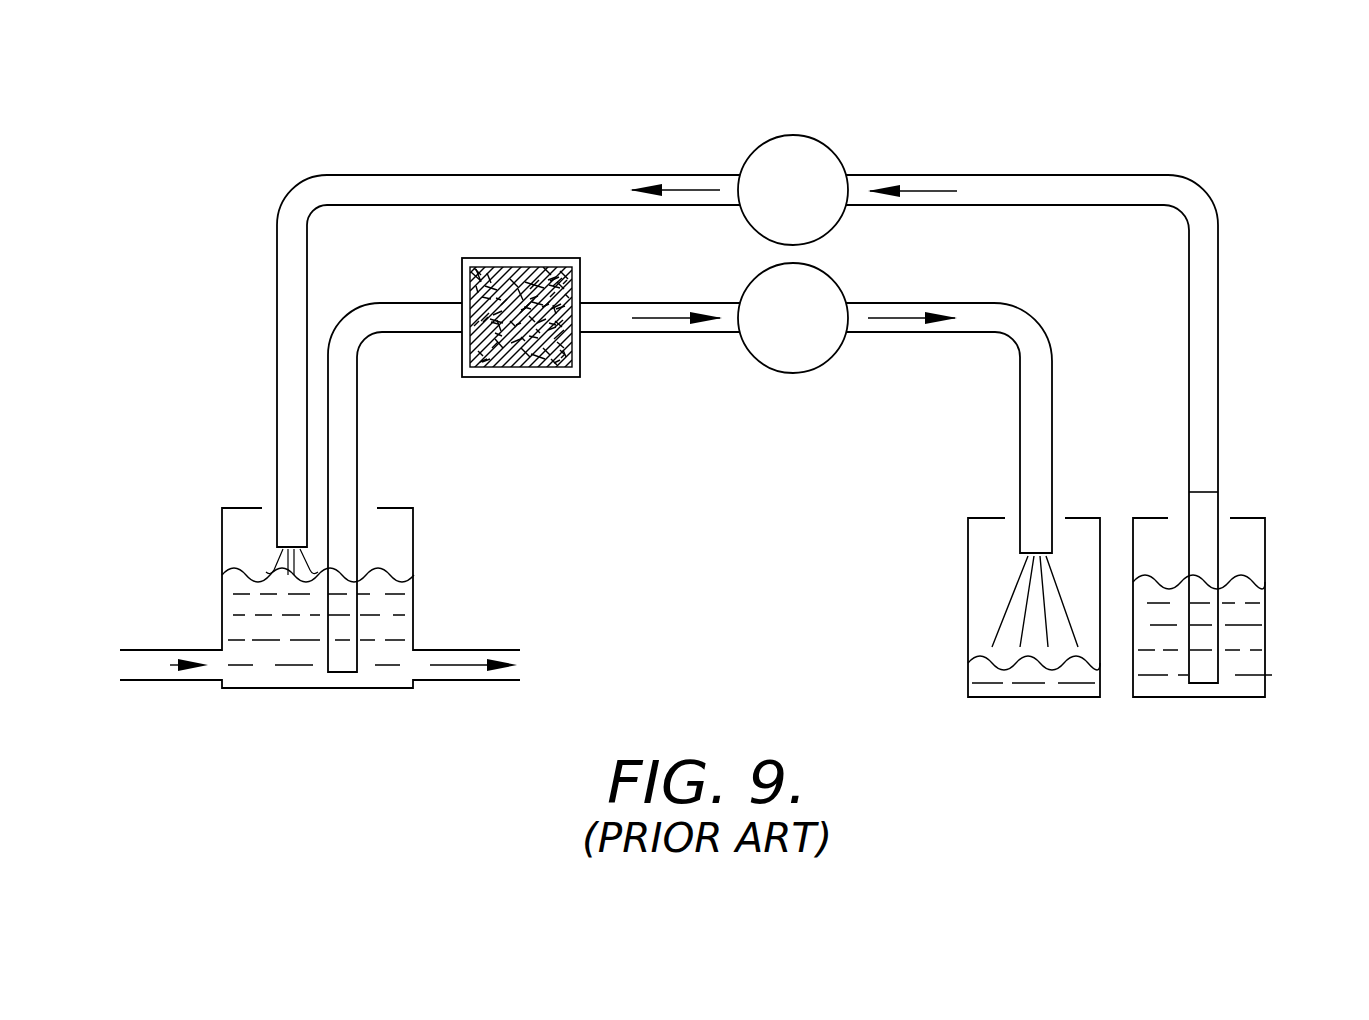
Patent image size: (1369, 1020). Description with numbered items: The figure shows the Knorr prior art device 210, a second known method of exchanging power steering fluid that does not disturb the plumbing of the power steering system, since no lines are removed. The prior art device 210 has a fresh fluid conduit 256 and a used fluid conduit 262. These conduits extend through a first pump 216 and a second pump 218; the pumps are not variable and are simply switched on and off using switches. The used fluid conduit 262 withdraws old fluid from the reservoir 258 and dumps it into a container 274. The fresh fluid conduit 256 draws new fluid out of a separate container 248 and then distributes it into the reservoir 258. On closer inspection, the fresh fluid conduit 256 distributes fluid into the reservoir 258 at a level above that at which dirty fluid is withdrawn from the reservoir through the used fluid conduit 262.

The prior art device 210 is at (1013, 148).
The first pump 216 is at (793, 145).
The second pump 218 is at (797, 362).
The container 248 is at (1265, 553).
The fresh fluid conduit 256 is at (573, 183).
The reservoir 258 is at (413, 540).
The used fluid conduit 262 is at (348, 422).
The container 274 is at (968, 578).